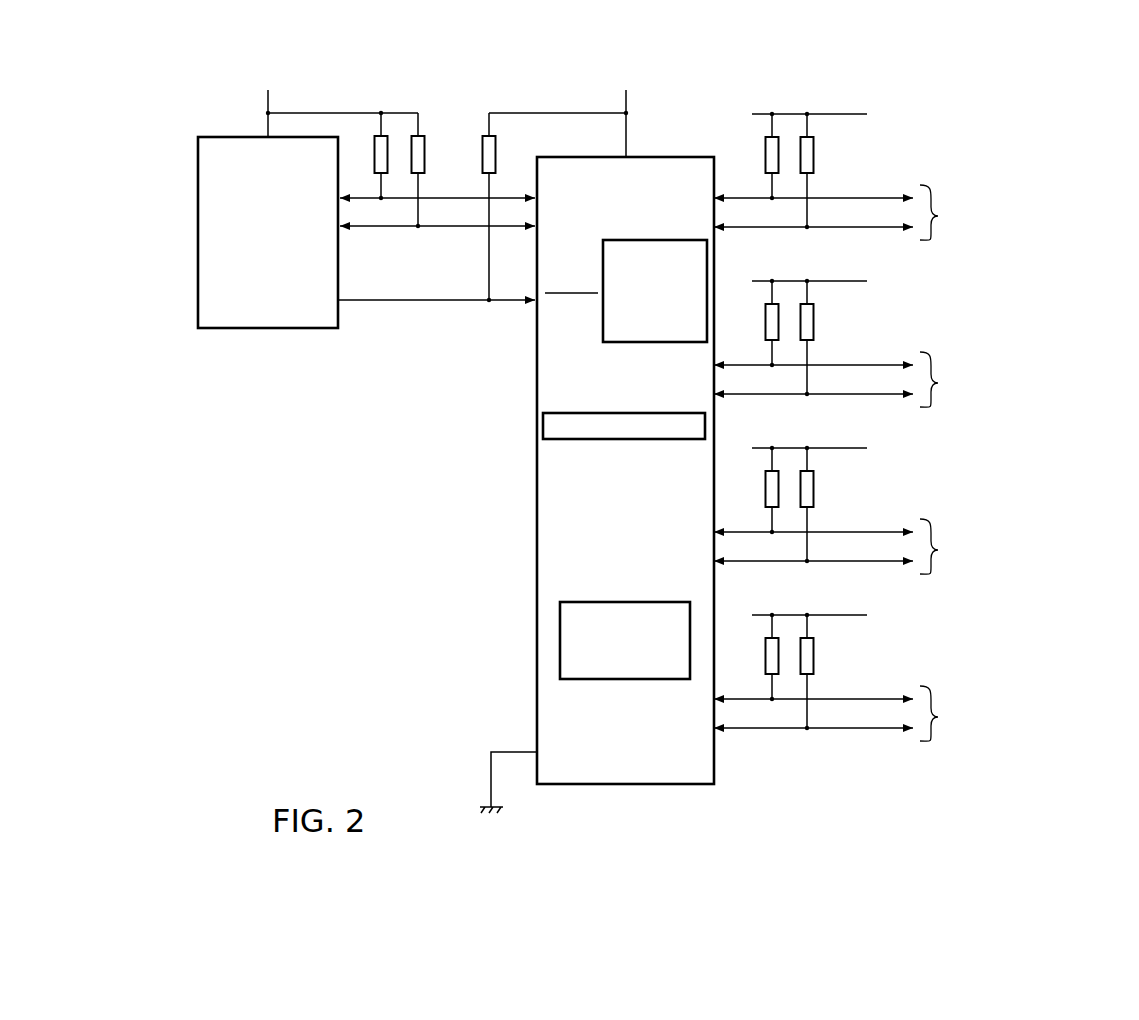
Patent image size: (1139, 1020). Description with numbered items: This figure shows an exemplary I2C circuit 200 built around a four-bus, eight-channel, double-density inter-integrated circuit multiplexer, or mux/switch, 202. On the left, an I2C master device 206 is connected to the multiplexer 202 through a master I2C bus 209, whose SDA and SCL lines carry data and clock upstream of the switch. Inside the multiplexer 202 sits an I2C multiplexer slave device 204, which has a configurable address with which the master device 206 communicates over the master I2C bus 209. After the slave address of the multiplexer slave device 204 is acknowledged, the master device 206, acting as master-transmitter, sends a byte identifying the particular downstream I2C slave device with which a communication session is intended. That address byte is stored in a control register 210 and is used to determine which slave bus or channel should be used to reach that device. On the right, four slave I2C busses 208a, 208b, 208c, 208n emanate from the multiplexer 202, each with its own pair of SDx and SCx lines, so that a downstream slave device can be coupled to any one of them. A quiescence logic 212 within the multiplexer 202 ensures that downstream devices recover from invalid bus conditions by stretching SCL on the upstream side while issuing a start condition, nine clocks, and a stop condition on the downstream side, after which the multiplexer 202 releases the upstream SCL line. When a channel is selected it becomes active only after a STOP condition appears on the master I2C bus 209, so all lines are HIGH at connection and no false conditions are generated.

The I2C circuit 200 is at (990, 131).
The I2C multiplexer 202 is at (606, 505).
The I2C multiplexer slave device 204 is at (603, 343).
The I2C master device 206 is at (268, 329).
The slave I2C bus 208a is at (1052, 212).
The slave I2C bus 208b is at (1050, 379).
The slave I2C bus 208c is at (1052, 545).
The slave I2C bus 208n is at (1052, 712).
The master I2C bus 209 is at (434, 266).
The control register 210 is at (543, 426).
The quiescence logic 212 is at (593, 602).